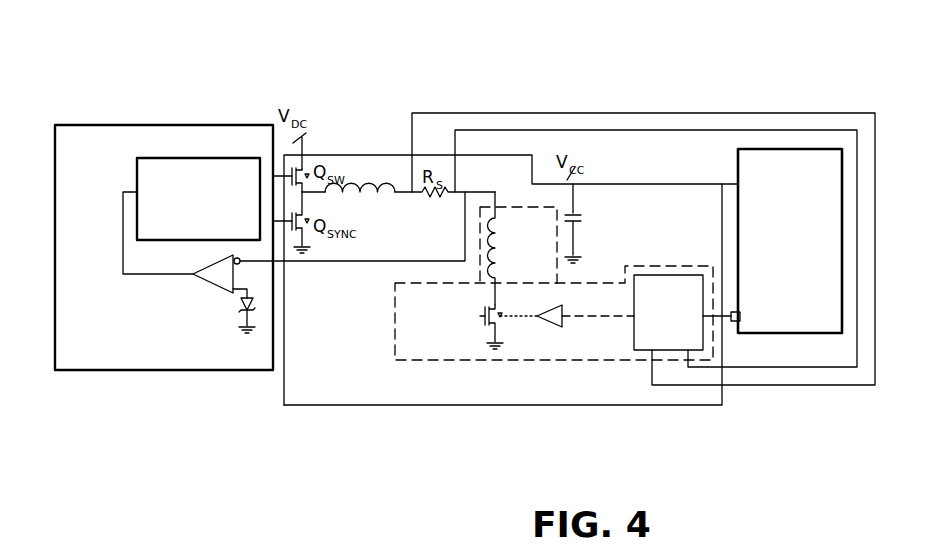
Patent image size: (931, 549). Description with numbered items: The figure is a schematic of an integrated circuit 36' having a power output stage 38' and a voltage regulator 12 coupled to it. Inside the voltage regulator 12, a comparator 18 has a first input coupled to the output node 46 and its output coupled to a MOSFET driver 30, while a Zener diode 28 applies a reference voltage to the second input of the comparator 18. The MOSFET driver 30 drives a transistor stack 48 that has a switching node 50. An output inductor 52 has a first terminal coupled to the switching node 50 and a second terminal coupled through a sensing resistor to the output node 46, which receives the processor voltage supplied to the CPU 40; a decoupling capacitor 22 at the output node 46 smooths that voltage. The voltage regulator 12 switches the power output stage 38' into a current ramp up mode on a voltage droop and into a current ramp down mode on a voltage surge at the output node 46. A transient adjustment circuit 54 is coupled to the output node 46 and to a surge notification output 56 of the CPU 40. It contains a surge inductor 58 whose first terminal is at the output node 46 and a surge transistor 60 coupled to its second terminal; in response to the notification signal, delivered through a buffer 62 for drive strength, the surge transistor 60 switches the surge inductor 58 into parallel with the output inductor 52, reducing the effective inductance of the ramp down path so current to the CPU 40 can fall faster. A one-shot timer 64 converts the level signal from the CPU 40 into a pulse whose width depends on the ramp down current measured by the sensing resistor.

The voltage regulator 12 is at (155, 124).
The MOSFET driver 30 is at (165, 158).
The comparator 18 is at (207, 282).
The Zener diode 28 is at (250, 318).
The power output stage 38' is at (511, 302).
The switching node 50 is at (305, 195).
The transistor stack 48 is at (385, 183).
The output inductor 52 is at (372, 153).
The integrated circuit 36' is at (643, 198).
The output node 46 is at (608, 190).
The decoupling capacitor 22 is at (606, 232).
The CPU 40 is at (790, 241).
The surge inductor 58 is at (483, 270).
The transient adjustment circuit 54 is at (523, 362).
The surge transistor 60 is at (500, 333).
The buffer 62 is at (553, 330).
The one-shot timer 64 is at (668, 352).
The surge notification output 56 is at (745, 322).